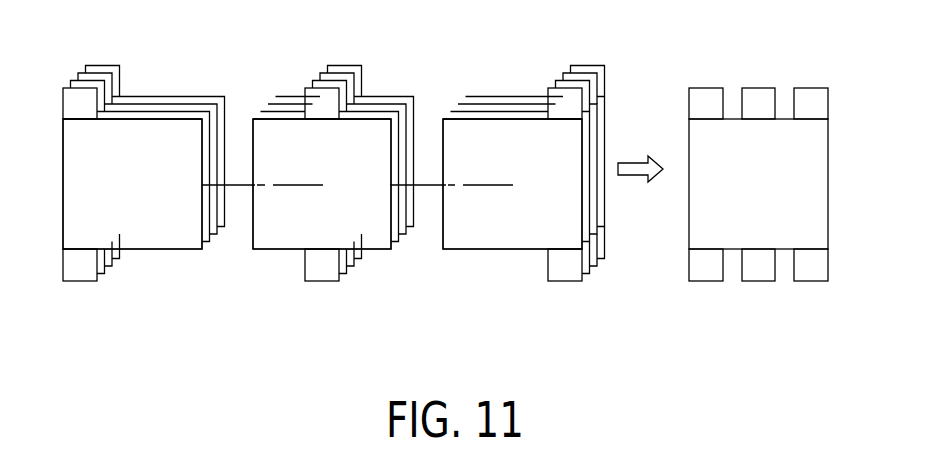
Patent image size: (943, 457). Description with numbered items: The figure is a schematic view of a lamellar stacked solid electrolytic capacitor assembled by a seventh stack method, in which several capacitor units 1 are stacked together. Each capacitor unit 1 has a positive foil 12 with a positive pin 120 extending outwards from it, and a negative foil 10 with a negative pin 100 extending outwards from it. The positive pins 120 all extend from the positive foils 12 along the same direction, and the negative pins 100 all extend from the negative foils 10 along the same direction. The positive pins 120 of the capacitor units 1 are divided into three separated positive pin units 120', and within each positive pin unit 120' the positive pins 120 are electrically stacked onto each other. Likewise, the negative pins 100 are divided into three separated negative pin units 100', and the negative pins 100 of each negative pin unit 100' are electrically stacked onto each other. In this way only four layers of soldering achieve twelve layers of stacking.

The capacitor unit 1 is at (183, 251).
The negative foil 10 is at (68, 281).
The positive foil 12 is at (79, 119).
The negative pin 100 is at (356, 299).
The positive pin 120 is at (356, 59).
The negative pin unit 100' is at (742, 314).
The positive pin unit 120' is at (760, 67).